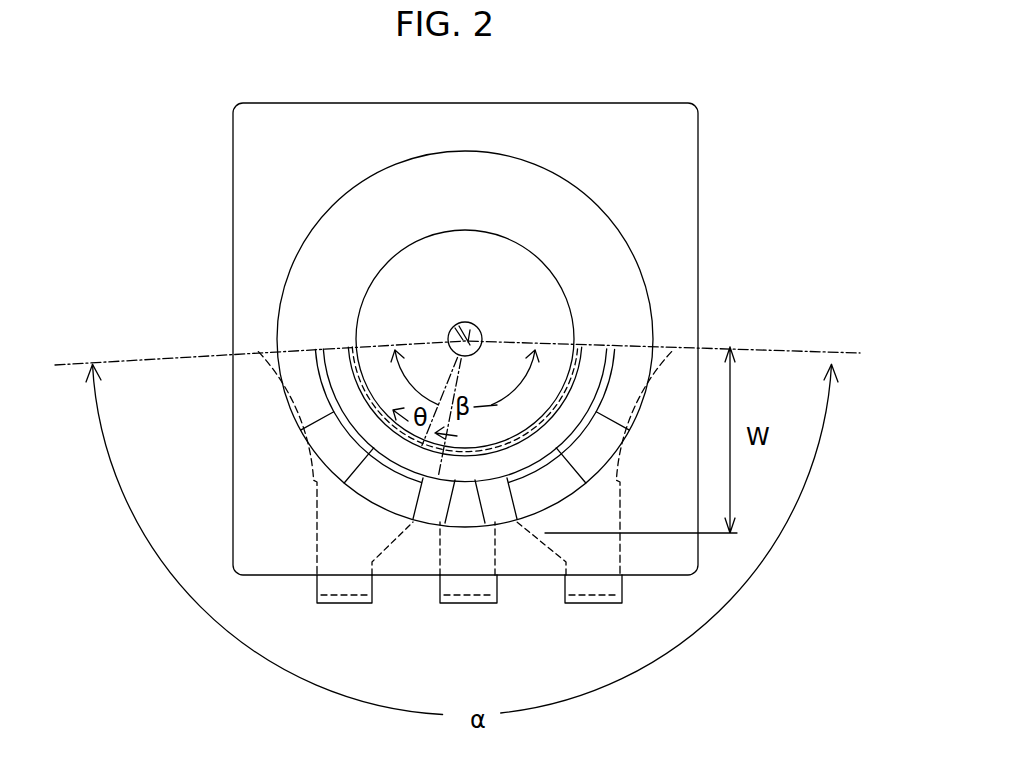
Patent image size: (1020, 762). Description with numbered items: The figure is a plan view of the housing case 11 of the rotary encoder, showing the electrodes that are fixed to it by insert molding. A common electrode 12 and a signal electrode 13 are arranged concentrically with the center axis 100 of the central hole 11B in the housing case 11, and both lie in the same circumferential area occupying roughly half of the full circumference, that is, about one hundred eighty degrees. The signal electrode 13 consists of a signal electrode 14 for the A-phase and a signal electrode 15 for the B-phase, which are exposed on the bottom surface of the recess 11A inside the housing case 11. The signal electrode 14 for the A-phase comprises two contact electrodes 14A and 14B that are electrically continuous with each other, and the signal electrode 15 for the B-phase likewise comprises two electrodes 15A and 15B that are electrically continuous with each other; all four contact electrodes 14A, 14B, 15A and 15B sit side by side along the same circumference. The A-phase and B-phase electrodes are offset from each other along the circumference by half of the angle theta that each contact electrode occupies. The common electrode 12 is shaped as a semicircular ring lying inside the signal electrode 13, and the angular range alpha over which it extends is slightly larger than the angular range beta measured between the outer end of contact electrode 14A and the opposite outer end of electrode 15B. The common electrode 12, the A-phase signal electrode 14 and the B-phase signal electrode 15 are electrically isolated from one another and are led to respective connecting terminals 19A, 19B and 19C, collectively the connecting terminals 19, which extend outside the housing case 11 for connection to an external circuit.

The center axis 100 is at (476, 328).
The housing case 11 is at (243, 172).
The recess 11A is at (575, 195).
The central hole 11B is at (452, 336).
The common electrode 12 is at (340, 388).
The signal electrode 13 is at (496, 345).
The signal electrode for A-phase 14 is at (283, 437).
The contact electrode 14A is at (292, 391).
The contact electrode 14B is at (383, 497).
The signal electrode for B-phase 15 is at (677, 345).
The contact electrode 15A is at (567, 477).
The contact electrode 15B is at (633, 352).
The connecting terminals 19 is at (477, 605).
The connecting terminal 19A is at (347, 590).
The connecting terminal 19B is at (569, 582).
The connecting terminal 19C is at (465, 590).